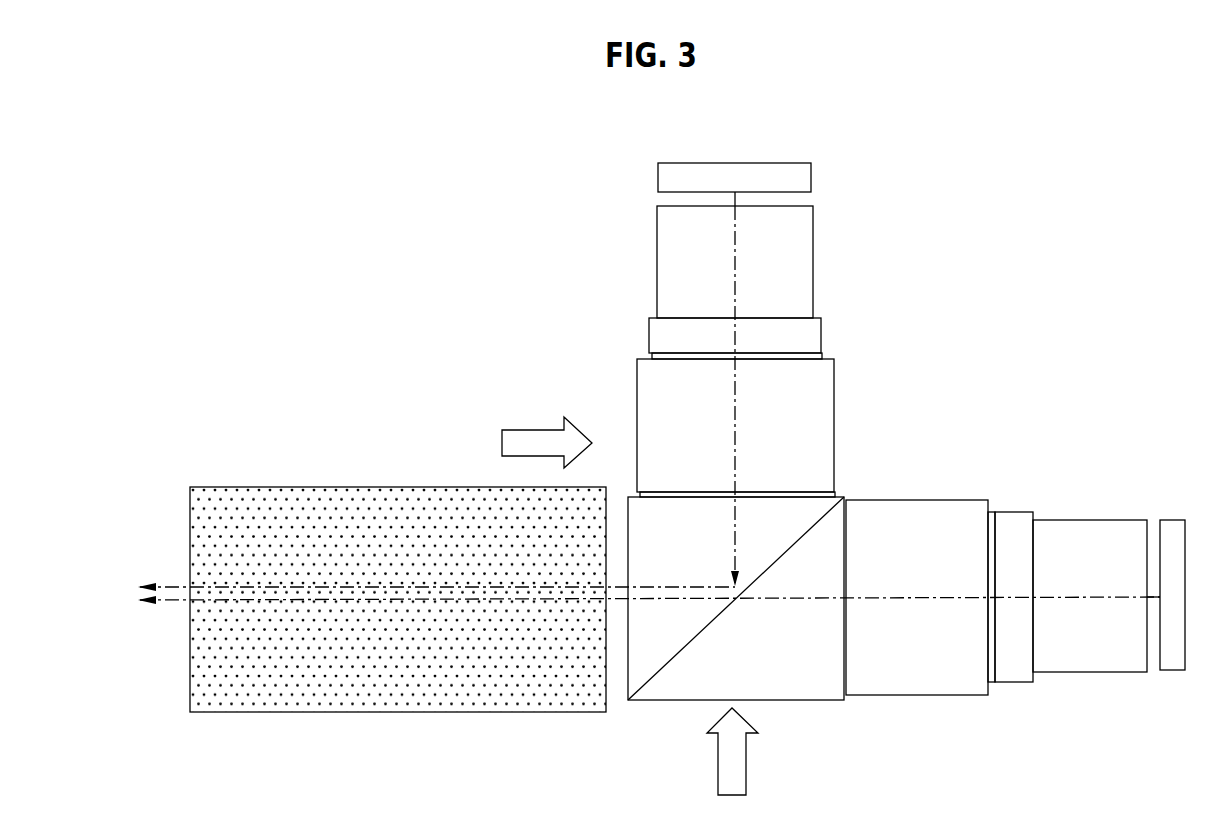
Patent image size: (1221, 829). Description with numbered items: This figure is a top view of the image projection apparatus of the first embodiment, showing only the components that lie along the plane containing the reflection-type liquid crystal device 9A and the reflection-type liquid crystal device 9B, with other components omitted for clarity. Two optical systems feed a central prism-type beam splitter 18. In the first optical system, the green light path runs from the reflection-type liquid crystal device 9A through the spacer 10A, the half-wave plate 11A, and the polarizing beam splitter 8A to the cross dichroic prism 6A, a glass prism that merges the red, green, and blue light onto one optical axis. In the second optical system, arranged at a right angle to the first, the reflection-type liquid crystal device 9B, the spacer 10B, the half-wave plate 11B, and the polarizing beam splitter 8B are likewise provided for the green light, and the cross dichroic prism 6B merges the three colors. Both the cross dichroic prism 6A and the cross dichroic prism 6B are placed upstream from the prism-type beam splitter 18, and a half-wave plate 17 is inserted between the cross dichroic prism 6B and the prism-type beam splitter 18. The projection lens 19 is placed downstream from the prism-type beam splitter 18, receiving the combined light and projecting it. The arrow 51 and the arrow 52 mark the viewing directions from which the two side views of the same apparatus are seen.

The cross dichroic prism 6A is at (913, 695).
The cross dichroic prism 6B is at (835, 430).
The polarizing beam splitter 8A is at (1095, 673).
The polarizing beam splitter 8B is at (813, 258).
The reflection-type liquid crystal device 9A is at (1172, 672).
The reflection-type liquid crystal device 9B is at (812, 178).
The spacer 10A is at (1025, 684).
The spacer 10B is at (822, 340).
The half-wave plate 11A is at (993, 684).
The half-wave plate 11B is at (823, 356).
The half-wave plate 17 is at (836, 497).
The prism-type beam splitter 18 is at (663, 702).
The projection lens 19 is at (468, 713).
The arrow 51 is at (746, 760).
The arrow 52 is at (534, 430).